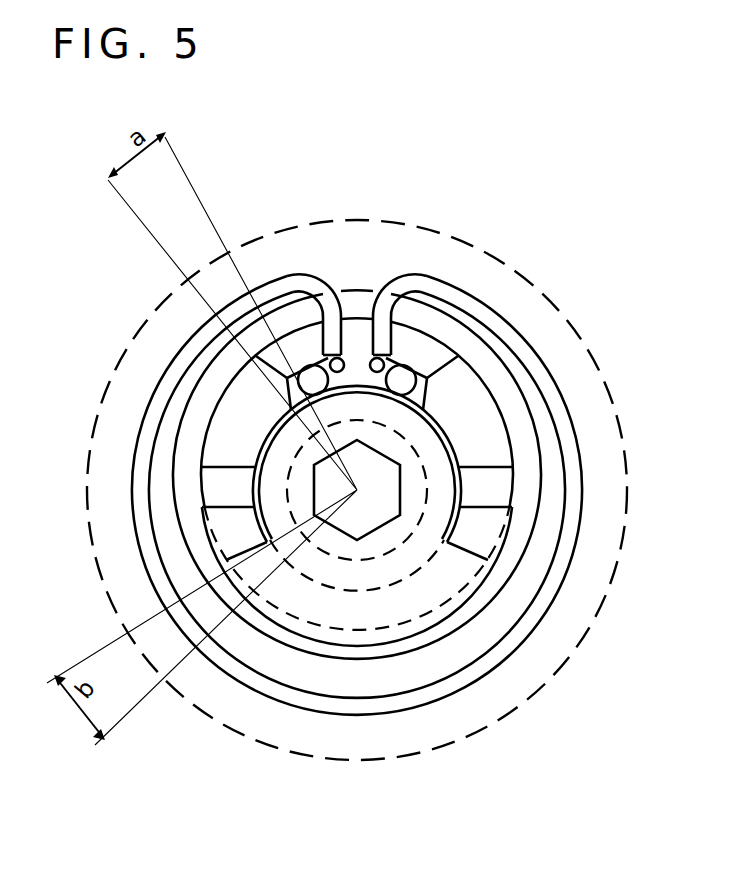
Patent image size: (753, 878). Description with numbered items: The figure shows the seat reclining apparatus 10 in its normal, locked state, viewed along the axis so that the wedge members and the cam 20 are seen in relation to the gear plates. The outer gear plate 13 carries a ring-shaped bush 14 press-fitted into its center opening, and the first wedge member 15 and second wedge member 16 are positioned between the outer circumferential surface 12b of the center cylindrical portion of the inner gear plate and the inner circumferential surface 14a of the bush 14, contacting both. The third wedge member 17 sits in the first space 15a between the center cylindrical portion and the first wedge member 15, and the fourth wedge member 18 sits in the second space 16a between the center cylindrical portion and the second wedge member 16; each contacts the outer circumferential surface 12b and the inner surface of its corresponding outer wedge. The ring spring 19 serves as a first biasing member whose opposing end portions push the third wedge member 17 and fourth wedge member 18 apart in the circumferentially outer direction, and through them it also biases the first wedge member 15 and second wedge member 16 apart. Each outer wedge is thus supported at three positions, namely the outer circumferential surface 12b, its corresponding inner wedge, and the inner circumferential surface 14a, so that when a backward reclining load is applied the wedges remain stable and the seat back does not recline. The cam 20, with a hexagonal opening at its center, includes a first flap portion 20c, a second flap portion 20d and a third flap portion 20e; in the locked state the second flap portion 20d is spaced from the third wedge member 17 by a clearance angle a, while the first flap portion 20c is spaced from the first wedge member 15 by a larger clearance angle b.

The seat reclining apparatus 10 is at (180, 725).
The outer circumferential surface 12b is at (364, 388).
The outer gear plate 13 is at (397, 258).
The bush 14 is at (357, 307).
The inner circumferential surface 14a is at (340, 340).
The first wedge member 15 is at (226, 490).
The first space 15a is at (289, 390).
The second wedge member 16 is at (488, 492).
The second space 16a is at (421, 392).
The third wedge member 17 is at (311, 376).
The fourth wedge member 18 is at (402, 378).
The ring spring 19 is at (250, 677).
The cam 20 is at (428, 538).
The first flap portion 20c is at (357, 612).
The second flap portion 20d is at (236, 413).
The third flap portion 20e is at (456, 420).